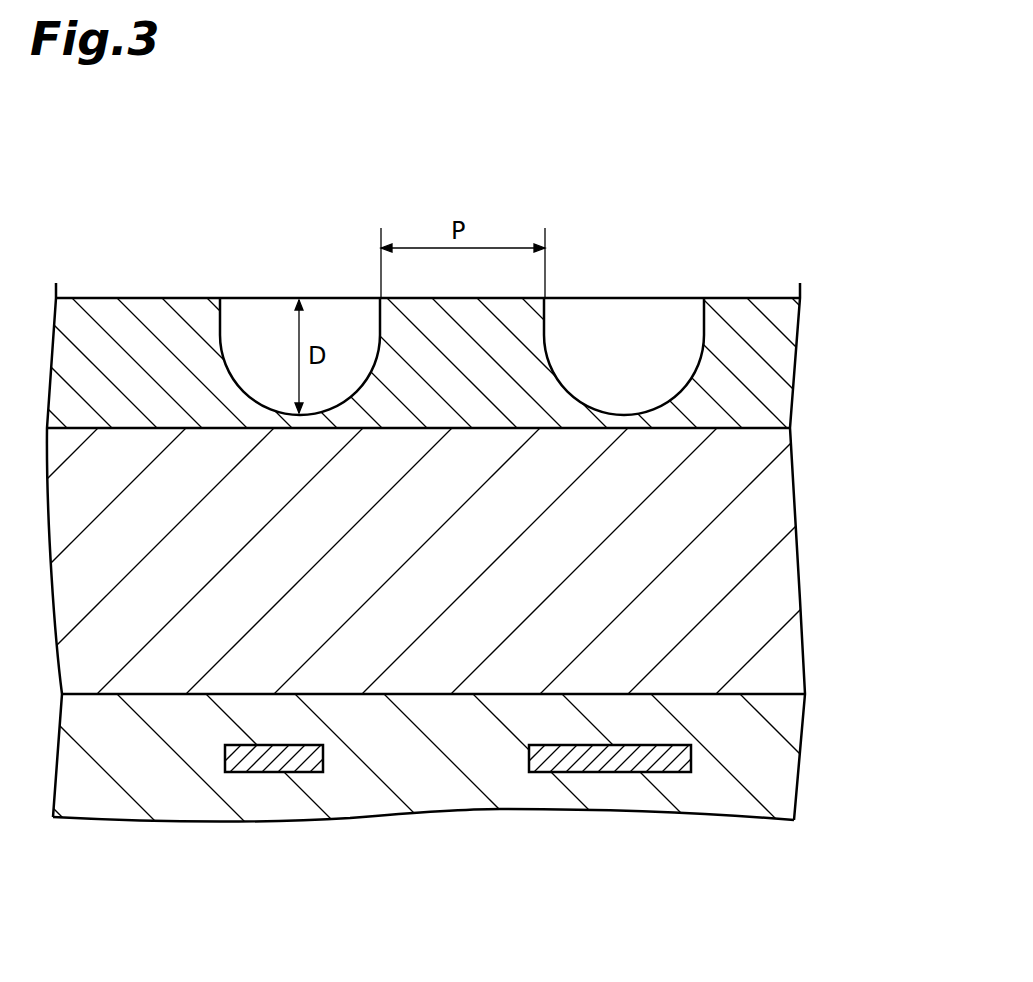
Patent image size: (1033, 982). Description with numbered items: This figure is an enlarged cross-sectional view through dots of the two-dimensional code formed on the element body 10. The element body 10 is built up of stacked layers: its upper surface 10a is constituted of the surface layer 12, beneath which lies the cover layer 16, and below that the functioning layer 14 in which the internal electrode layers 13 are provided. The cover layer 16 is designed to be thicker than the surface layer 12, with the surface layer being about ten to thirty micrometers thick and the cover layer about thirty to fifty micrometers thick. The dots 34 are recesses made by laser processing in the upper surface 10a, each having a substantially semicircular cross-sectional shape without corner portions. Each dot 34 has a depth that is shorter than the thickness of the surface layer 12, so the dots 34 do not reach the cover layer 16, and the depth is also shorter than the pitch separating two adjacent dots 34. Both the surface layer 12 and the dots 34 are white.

The element body 10 is at (906, 343).
The upper surface 10a is at (748, 298).
The surface layer 12 is at (753, 372).
The cover layer 16 is at (740, 588).
The functioning layer 14 is at (735, 771).
The dot 34 is at (221, 330).
The internal electrode layer 13 is at (575, 772).